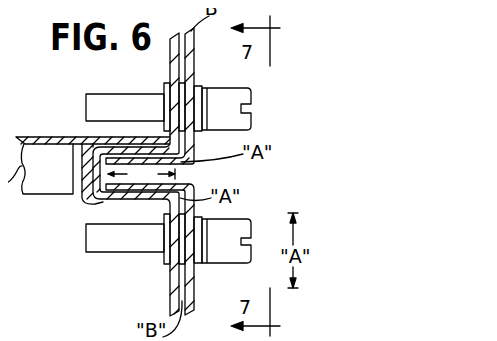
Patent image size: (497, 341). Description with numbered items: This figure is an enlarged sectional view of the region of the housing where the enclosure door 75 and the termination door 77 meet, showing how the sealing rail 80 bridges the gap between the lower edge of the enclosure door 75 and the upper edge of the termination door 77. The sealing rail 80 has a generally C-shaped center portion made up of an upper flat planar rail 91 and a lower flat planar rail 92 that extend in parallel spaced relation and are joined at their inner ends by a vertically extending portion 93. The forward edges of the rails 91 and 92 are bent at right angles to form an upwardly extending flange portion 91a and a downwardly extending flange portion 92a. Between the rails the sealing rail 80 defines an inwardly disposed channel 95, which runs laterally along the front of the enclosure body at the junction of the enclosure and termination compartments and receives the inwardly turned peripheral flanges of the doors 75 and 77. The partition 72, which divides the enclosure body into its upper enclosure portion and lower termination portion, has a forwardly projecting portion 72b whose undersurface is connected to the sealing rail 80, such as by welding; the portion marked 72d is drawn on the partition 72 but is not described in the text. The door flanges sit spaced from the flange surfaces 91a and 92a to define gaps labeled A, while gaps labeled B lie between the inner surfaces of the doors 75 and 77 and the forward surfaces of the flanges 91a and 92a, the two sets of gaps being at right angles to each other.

The partition 72 is at (42, 137).
The forwardly projecting portion 72b is at (85, 154).
The panel portion 72d is at (68, 136).
The sealing rail 80 is at (84, 168).
The upper flat planar rail 91 is at (98, 151).
The upwardly extending flange portion 91a is at (172, 66).
The lower flat planar rail 92 is at (97, 199).
The downwardly extending flange portion 92a is at (168, 281).
The vertically extending portion 93 is at (68, 194).
The enclosure door 75 is at (191, 141).
The termination door 77 is at (192, 276).
The channel 95 is at (173, 172).